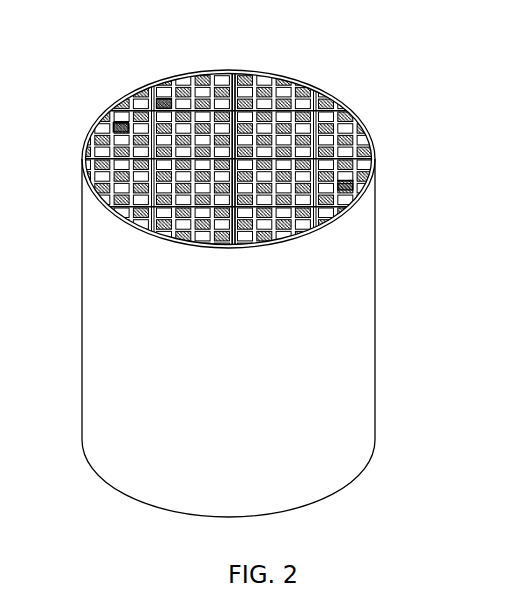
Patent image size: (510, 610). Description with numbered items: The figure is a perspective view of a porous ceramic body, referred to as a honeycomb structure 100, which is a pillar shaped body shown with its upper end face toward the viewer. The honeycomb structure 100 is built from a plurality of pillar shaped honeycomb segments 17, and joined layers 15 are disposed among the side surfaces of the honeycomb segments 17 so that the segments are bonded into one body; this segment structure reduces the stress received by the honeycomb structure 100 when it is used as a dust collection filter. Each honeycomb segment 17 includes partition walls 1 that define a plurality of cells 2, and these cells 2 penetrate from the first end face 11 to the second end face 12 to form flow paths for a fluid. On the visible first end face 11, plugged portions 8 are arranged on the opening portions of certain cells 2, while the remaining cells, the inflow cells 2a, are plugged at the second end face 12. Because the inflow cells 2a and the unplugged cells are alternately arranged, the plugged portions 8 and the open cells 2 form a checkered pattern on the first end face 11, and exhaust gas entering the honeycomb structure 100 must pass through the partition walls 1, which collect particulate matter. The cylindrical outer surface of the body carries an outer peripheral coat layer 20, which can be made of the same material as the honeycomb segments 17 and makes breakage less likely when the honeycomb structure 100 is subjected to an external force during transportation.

The honeycomb structure 100 is at (246, 281).
The partition walls 1 is at (183, 92).
The cells 2 is at (263, 147).
The inflow cells 2a is at (243, 90).
The plugged portions 8 is at (157, 95).
The first end face 11 is at (292, 80).
The joined layers 15 is at (347, 208).
The honeycomb segments 17 is at (114, 127).
The outer peripheral coat layer 20 is at (355, 332).
The second end face 12 is at (293, 508).